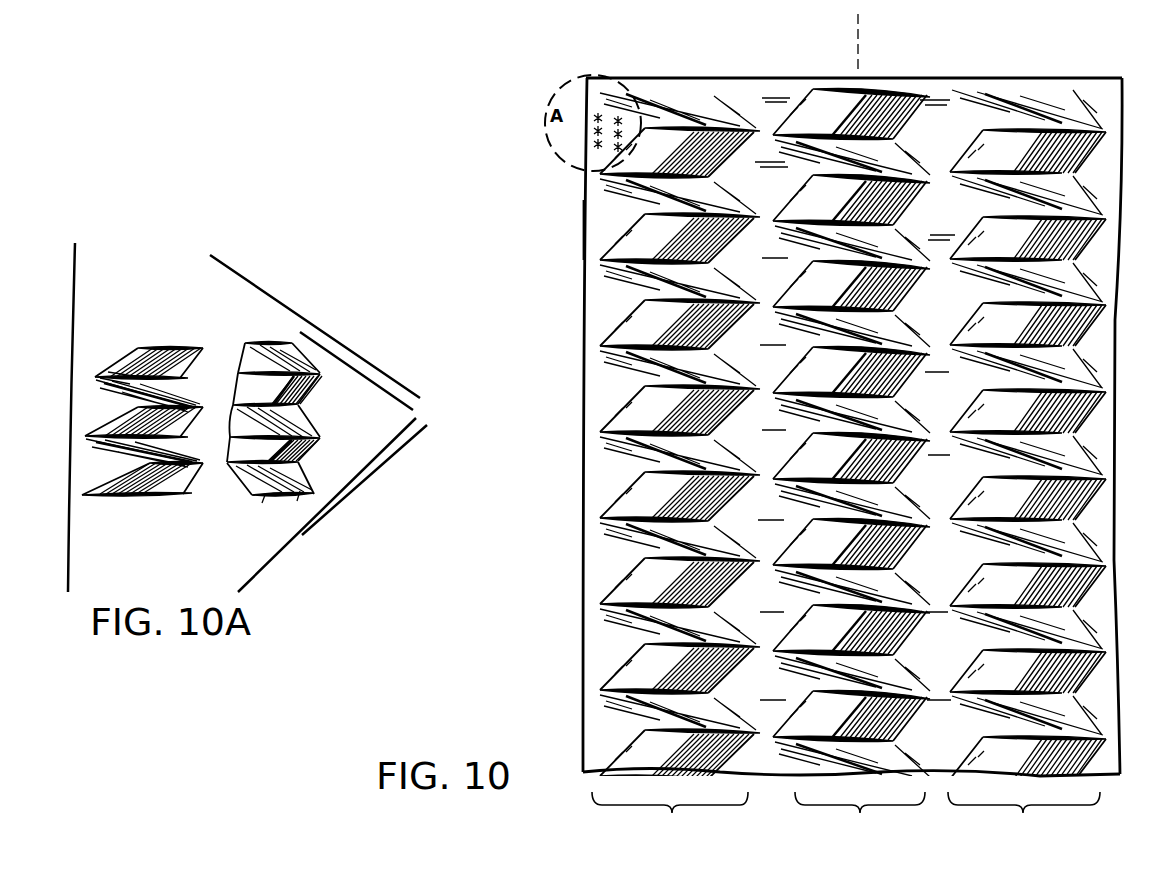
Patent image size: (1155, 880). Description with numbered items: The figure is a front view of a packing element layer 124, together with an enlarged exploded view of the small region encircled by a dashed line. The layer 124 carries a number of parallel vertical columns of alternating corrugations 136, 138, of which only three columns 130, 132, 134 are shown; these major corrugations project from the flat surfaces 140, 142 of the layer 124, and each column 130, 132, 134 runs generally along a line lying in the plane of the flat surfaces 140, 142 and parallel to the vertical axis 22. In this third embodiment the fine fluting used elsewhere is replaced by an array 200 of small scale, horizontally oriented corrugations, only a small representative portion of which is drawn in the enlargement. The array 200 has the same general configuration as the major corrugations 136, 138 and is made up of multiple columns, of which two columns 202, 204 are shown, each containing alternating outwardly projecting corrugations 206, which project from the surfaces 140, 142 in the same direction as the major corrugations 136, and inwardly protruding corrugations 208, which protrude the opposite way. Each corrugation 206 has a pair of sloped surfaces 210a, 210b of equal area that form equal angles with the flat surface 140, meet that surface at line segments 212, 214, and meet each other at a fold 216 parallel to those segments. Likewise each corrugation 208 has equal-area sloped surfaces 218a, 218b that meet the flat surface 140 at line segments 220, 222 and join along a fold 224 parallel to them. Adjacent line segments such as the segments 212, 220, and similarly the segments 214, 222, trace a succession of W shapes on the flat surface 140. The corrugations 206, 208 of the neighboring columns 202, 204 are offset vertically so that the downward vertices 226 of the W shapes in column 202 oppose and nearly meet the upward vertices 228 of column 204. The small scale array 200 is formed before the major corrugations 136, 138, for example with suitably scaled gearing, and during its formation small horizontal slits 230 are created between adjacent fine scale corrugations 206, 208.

In FIG. 10, the vertical axis 22 is at (858, 37).
In FIG. 10, the packing element layer 124 is at (1027, 60).
In FIG. 10, the first column 130 is at (687, 465).
In FIG. 10, the second column 132 is at (851, 464).
In FIG. 10, the third column 134 is at (1027, 465).
In FIG. 10, the major corrugation 136 is at (707, 148).
In FIG. 10, the major corrugation 138 is at (717, 200).
In FIG. 10, the flat surface 140 is at (632, 226).
In FIG. 10A, the flat surface 140 is at (257, 567).
In FIG. 10, the flat surface 142 is at (790, 268).
In FIG. 10A, the array of small scale corrugations 200 is at (146, 254).
In FIG. 10A, the column of small scale corrugations 202 is at (217, 412).
In FIG. 10A, the column of small scale corrugations 204 is at (221, 380).
In FIG. 10A, the outwardly projecting corrugation 206 is at (323, 394).
In FIG. 10A, the inwardly protruding corrugation 208 is at (279, 339).
In FIG. 10A, the sloped surface 210a is at (188, 346).
In FIG. 10A, the sloped surface 210b is at (127, 366).
In FIG. 10A, the line segment 212 is at (184, 362).
In FIG. 10A, the line segment 214 is at (110, 374).
In FIG. 10A, the fold 216 is at (106, 379).
In FIG. 10A, the sloped surface 218a is at (300, 357).
In FIG. 10A, the sloped surface 218b is at (250, 345).
In FIG. 10A, the line segment 220 is at (178, 392).
In FIG. 10A, the line segment 222 is at (95, 430).
In FIG. 10A, the fold 224 is at (318, 364).
In FIG. 10A, the downward vertex 226 is at (200, 411).
In FIG. 10A, the upward vertex 228 is at (250, 446).
In FIG. 10A, the horizontal slit 230 is at (120, 512).